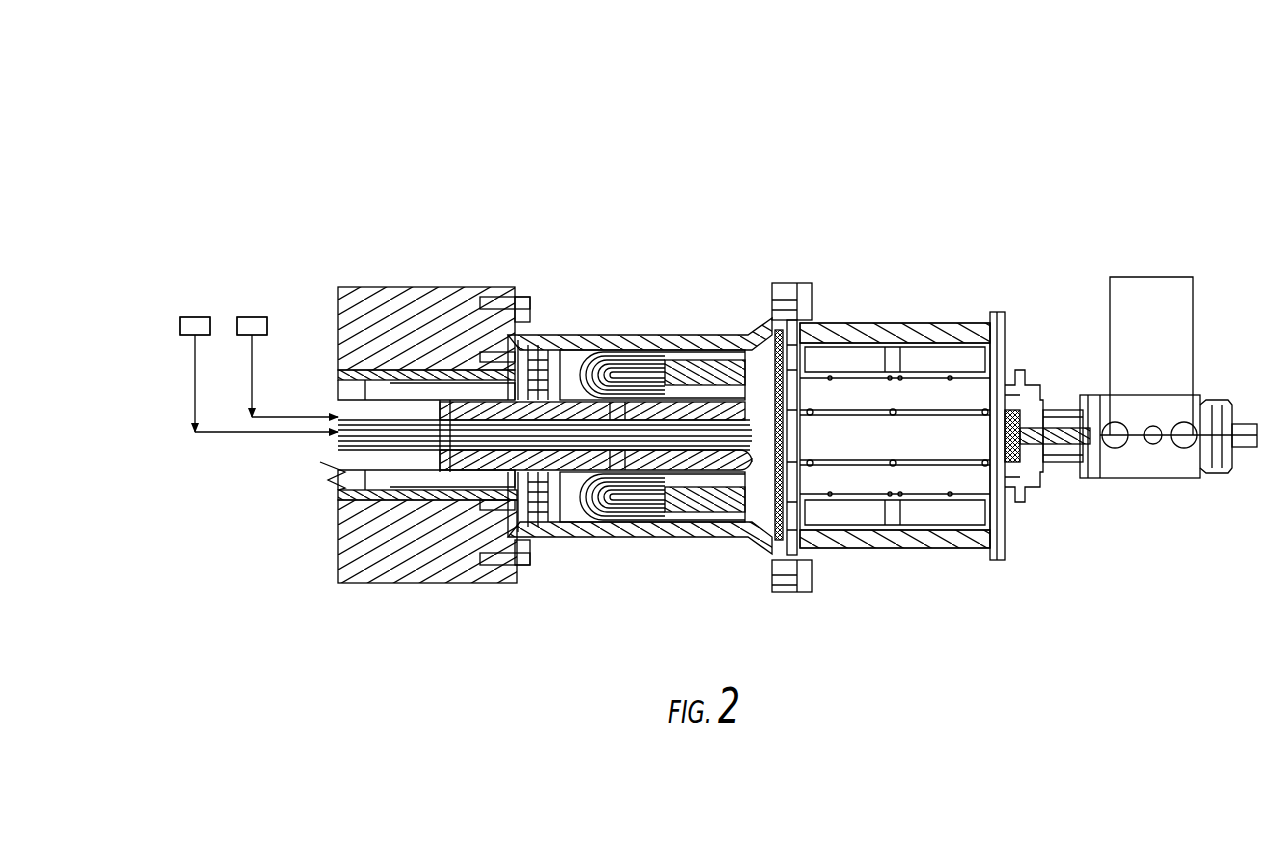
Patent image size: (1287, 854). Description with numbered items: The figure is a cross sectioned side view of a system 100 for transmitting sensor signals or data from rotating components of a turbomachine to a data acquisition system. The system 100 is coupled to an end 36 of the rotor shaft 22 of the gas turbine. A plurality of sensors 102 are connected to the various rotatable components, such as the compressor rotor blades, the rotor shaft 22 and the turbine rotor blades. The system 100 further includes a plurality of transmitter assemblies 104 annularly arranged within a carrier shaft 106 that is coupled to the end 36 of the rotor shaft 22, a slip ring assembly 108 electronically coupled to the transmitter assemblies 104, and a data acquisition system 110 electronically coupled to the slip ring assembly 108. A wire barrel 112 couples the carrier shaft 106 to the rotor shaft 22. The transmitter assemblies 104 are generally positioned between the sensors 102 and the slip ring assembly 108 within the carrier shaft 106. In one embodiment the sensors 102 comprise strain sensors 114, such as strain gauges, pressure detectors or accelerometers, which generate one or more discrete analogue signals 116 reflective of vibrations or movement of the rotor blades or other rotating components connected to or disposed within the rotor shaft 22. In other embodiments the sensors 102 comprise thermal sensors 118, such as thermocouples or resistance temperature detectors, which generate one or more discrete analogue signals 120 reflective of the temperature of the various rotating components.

The rotor shaft 22 is at (345, 585).
The end of the rotor shaft 36 is at (503, 590).
The system 100 is at (902, 138).
The sensors 102 is at (197, 317).
The transmitter assemblies 104 is at (940, 323).
The carrier shaft 106 is at (865, 321).
The slip ring assembly 108 is at (1128, 484).
The data acquisition system 110 is at (1155, 277).
The wire barrel 112 is at (673, 323).
The strain sensors 114 is at (252, 317).
The discrete analogue signals 116 is at (253, 372).
The thermal sensors 118 is at (180, 326).
The discrete analogue signals 120 is at (192, 385).